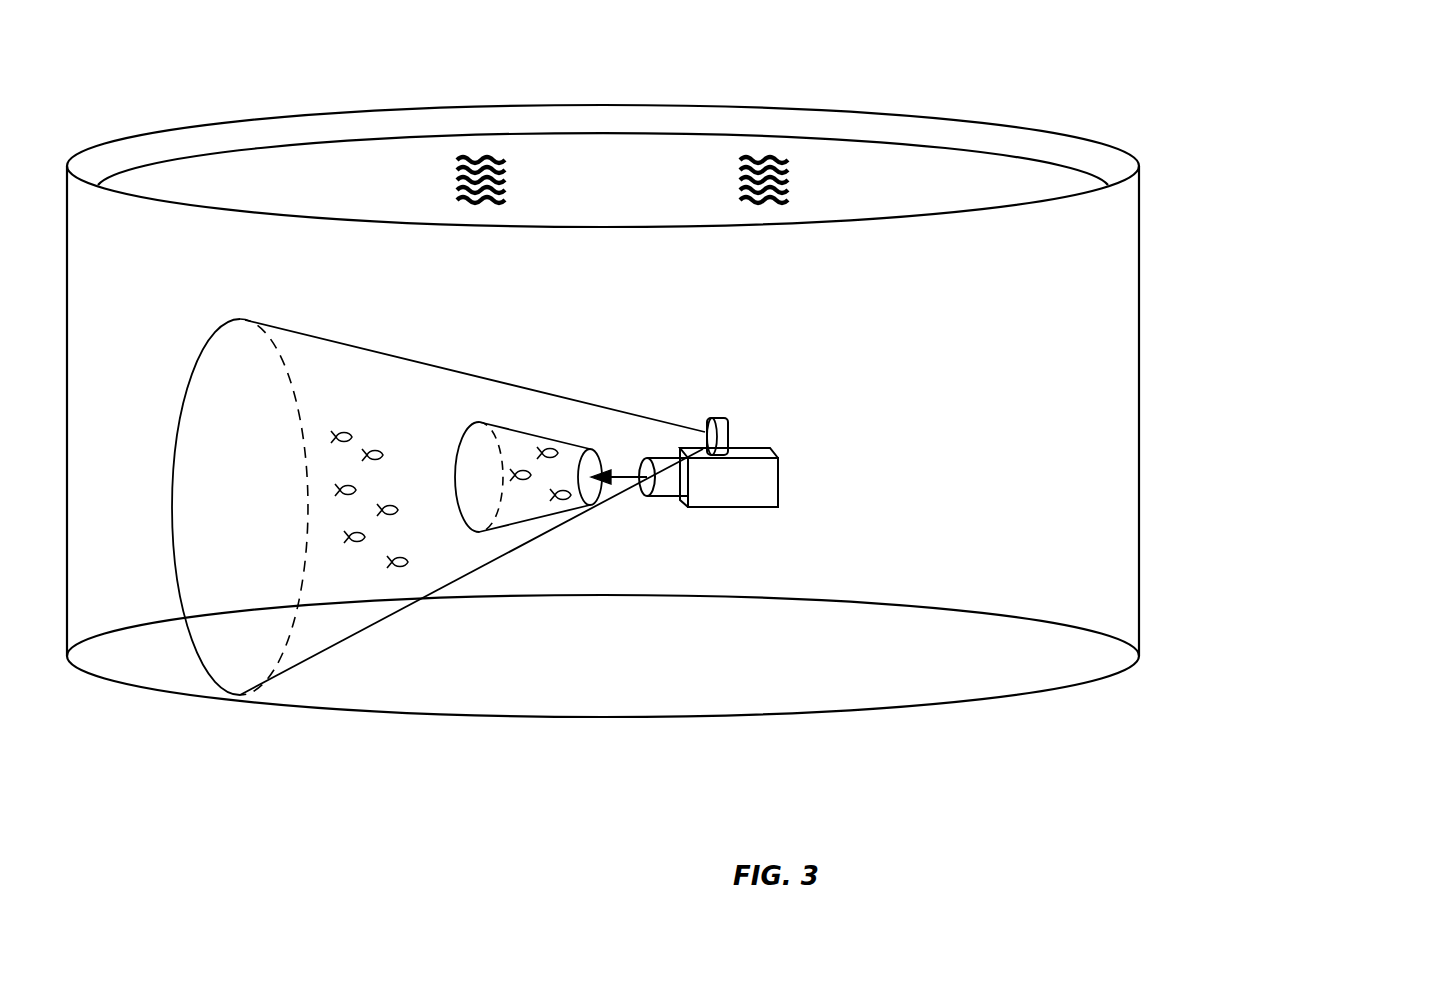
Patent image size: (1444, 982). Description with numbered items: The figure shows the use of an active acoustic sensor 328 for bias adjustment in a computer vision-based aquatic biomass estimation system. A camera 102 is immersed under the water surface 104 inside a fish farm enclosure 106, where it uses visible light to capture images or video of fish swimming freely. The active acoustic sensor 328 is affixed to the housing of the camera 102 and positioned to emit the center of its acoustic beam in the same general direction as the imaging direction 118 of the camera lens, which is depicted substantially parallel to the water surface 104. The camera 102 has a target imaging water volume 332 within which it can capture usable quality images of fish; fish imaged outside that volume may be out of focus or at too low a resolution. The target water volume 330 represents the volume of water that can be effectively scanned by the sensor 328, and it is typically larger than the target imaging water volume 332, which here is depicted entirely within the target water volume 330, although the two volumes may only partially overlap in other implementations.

The camera 102 is at (778, 476).
The water surface 104 is at (1040, 155).
The fish farm enclosure 106 is at (1140, 545).
The imaging direction 118 is at (622, 477).
The active acoustic sensor 328 is at (717, 418).
The target water volume 330 is at (367, 348).
The target imaging water volume 332 is at (542, 540).